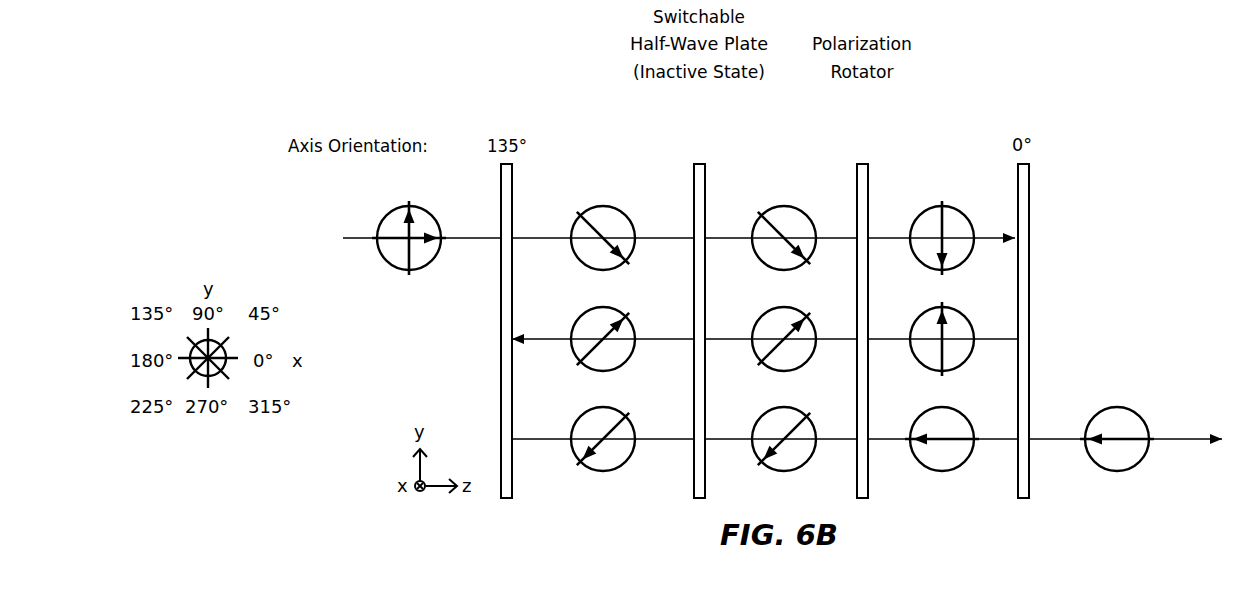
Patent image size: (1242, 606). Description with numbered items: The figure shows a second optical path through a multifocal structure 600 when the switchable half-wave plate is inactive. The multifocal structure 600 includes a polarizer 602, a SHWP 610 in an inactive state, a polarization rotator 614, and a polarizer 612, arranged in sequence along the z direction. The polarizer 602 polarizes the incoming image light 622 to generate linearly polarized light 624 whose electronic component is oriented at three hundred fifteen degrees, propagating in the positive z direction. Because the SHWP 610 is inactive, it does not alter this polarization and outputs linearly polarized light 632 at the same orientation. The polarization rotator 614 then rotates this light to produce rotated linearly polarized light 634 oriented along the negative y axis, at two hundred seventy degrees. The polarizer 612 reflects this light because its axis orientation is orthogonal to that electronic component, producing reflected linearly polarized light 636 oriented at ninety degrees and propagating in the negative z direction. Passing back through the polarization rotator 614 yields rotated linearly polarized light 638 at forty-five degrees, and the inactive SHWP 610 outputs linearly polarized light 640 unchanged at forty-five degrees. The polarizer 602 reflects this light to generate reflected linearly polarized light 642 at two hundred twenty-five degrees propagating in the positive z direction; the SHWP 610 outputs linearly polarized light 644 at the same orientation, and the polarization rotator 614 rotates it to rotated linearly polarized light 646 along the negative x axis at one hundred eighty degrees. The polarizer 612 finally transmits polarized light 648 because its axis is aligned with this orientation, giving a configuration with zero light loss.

The multifocal structure 600 is at (1194, 45).
The polarizer 602 is at (506, 279).
The SHWP 610 is at (699, 293).
The polarizer 612 is at (1023, 279).
The polarization rotator 614 is at (862, 293).
The image light 622 is at (389, 229).
The linearly polarized light 624 is at (581, 226).
The linearly polarized light 632 is at (769, 226).
The rotated linearly polarized light 634 is at (928, 229).
The reflected linearly polarized light 636 is at (928, 329).
The rotated linearly polarized light 638 is at (769, 327).
The linearly polarized light 640 is at (581, 327).
The reflected linearly polarized light 642 is at (581, 429).
The linearly polarized light 644 is at (769, 429).
The rotated linearly polarized light 646 is at (930, 429).
The polarized light 648 is at (1099, 429).